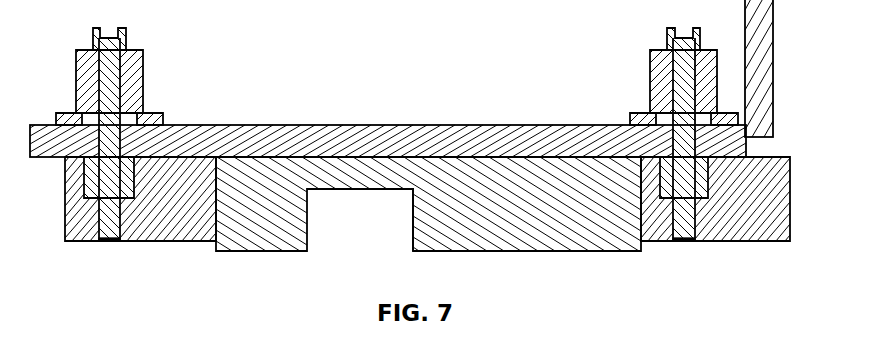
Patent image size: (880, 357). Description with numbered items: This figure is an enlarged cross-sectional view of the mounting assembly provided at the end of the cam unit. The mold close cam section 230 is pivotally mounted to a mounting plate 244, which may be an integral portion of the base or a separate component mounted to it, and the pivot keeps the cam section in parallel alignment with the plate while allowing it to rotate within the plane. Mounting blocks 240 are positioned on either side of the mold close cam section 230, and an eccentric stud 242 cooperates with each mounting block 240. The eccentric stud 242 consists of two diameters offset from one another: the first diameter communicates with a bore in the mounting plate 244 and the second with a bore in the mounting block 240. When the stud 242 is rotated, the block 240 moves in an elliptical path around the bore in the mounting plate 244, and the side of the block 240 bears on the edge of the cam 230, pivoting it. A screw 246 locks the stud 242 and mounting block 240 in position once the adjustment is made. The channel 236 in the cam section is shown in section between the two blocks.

The mold close cam section 230 is at (507, 243).
The channel 236 is at (366, 242).
The mounting block 240 is at (166, 232).
The eccentric stud 242 is at (136, 68).
The mounting plate 244 is at (350, 133).
The screw 246 is at (108, 238).